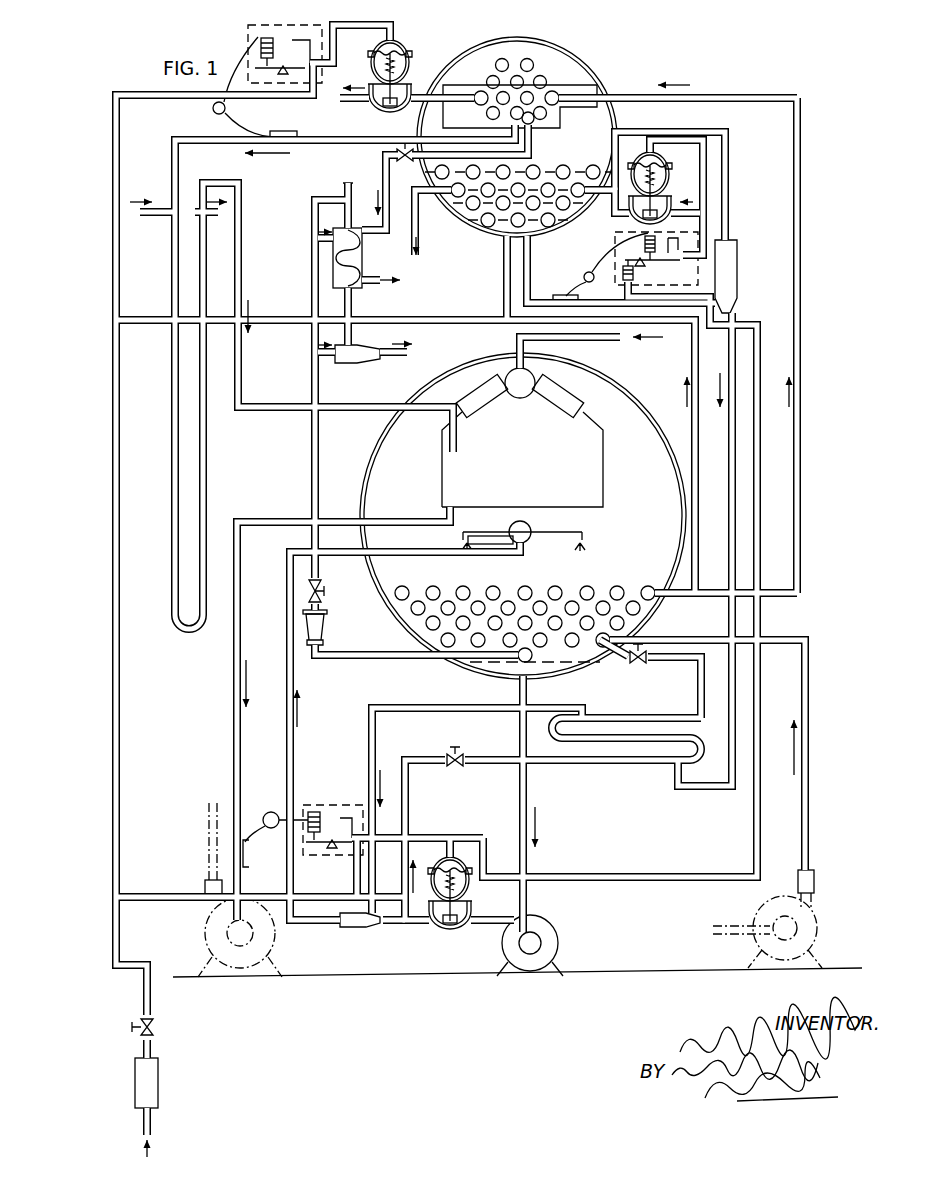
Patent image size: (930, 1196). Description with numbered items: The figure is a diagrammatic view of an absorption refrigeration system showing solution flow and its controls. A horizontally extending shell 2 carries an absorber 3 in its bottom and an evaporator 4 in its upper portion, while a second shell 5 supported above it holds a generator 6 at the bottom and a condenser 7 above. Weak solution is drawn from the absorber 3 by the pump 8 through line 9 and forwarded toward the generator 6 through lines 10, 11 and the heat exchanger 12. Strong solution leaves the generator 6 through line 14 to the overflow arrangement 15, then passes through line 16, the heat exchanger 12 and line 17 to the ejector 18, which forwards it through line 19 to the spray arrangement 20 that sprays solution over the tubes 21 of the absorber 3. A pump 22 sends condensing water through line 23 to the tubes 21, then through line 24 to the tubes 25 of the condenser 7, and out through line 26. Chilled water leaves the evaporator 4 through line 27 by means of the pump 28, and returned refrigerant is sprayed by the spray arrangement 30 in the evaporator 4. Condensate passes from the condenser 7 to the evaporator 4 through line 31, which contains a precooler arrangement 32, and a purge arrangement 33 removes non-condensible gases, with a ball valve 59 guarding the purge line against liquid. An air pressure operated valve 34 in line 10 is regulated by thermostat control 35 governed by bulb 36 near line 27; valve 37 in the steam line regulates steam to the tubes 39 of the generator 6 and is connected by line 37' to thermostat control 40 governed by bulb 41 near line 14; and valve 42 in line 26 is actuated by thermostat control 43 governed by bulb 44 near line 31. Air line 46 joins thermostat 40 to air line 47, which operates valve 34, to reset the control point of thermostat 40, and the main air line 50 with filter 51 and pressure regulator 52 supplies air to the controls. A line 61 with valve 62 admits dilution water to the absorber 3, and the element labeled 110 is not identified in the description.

The shell 2 is at (382, 430).
The absorber 3 is at (393, 617).
The evaporator 4 is at (598, 442).
The second shell 5 is at (455, 65).
The generator 6 is at (468, 217).
The condenser 7 is at (553, 83).
The pump 8 is at (558, 943).
The line 9 is at (521, 720).
The line 10 is at (479, 926).
The line 11 is at (409, 795).
The heat exchanger 12 is at (609, 770).
The line 14 is at (550, 296).
The overflow arrangement 15 is at (733, 291).
The line 16 is at (727, 433).
The line 17 is at (368, 749).
The ejector 18 is at (354, 928).
The line 19 is at (294, 785).
The spray arrangement 20 is at (529, 540).
The tubes 21 is at (600, 598).
The pump 22 is at (818, 938).
The line 23 is at (810, 680).
The line 24 is at (800, 326).
The tubes 25 is at (527, 78).
The line 26 is at (352, 102).
The line 27 is at (233, 788).
The pump 28 is at (226, 940).
The spray arrangement 30 is at (520, 396).
The line 31 is at (180, 139).
The precooler arrangement 32 is at (170, 297).
The purge arrangement 33 is at (363, 258).
The air pressure operated valve 34 is at (440, 932).
The thermostat control 35 is at (337, 805).
The bulb 36 is at (249, 855).
The air pressure operated valve 37 is at (655, 186).
The line 37' is at (707, 197).
The tubes 39 is at (592, 163).
The thermostat control 40 is at (628, 286).
The bulb 41 is at (572, 280).
The air pressure operated valve 42 is at (386, 110).
The thermostat control 43 is at (248, 29).
The bulb 44 is at (283, 131).
The air line 46 is at (760, 368).
The air line 47 is at (452, 840).
The main air line 50 is at (118, 825).
The filter 51 is at (160, 1088).
The pressure regulator 52 is at (158, 1027).
The ball valve 59 is at (327, 632).
The line 61 is at (660, 661).
The valve 62 is at (640, 664).
The venturi 110 is at (408, 320).